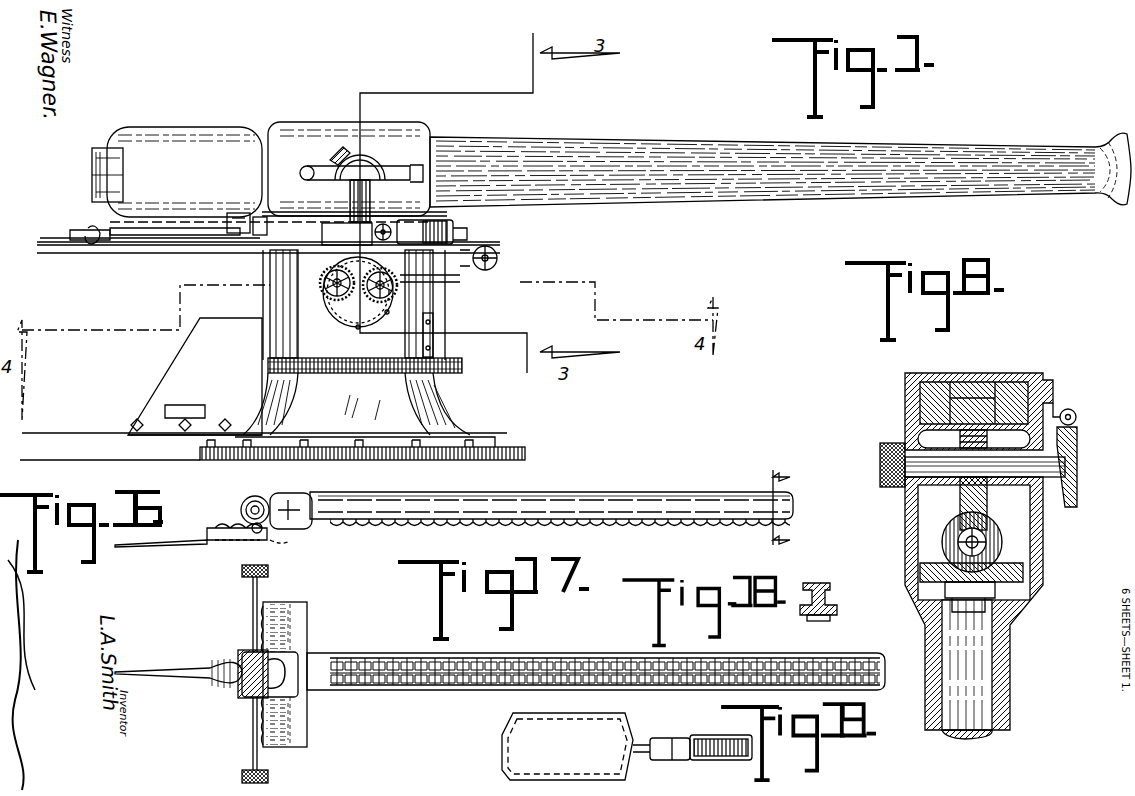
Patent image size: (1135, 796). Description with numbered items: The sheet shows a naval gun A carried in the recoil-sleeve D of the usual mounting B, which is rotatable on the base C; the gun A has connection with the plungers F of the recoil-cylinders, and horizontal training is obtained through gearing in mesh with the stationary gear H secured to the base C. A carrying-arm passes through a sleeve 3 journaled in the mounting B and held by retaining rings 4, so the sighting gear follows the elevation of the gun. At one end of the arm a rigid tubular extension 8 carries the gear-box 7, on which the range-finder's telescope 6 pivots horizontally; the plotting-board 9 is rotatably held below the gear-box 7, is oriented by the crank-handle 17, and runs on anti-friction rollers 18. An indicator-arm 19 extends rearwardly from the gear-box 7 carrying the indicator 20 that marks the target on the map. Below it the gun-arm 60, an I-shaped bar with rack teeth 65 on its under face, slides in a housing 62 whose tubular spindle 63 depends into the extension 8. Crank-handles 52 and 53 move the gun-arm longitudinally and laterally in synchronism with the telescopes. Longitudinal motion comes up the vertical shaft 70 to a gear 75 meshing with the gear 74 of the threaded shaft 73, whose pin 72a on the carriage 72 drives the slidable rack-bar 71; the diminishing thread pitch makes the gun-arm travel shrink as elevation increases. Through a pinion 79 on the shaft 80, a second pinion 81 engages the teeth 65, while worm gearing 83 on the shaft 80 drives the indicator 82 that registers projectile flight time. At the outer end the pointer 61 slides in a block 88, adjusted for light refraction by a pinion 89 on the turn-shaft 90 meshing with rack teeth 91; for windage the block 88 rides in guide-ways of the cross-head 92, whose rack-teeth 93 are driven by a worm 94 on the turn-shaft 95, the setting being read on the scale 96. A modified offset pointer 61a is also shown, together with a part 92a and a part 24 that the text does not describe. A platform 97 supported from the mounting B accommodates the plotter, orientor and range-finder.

In FIG. 1, the naval gun A is at (508, 140).
In FIG. 1, the recoil-sleeve D is at (390, 140).
In FIG. 1, the mounting B is at (270, 295).
In FIG. 1, the base C is at (455, 405).
In FIG. 1, the stationary gear H is at (465, 365).
In FIG. 1, the plungers F is at (212, 232).
In FIG. 1, the sleeve 3 is at (330, 300).
In FIG. 1, the retaining rings 4 is at (345, 320).
In FIG. 1, the range-finder's telescope 6 is at (320, 168).
In FIG. 1, the gear-box 7 is at (345, 235).
In FIG. 1, the tubular extension 8 is at (397, 281).
In FIG. 1, the plotting-board 9 is at (232, 248).
In FIG. 1, the crank-handle 17 is at (498, 258).
In FIG. 16, the anti-friction rollers 18 is at (795, 502).
In FIG. 1, the indicator-arm 19 is at (185, 230).
In FIG. 1, the indicator 20 is at (90, 230).
In FIG. 1, the cylinder 24 is at (395, 208).
In FIG. 1, the crank-handle 52 is at (326, 280).
In FIG. 1, the crank-handle 53 is at (420, 290).
In FIG. 1, the gun-arm 60 is at (158, 250).
In FIG. 8, the gun-arm 60 is at (1000, 368).
In FIG. 16, the gun-arm 60 is at (670, 500).
In FIG. 17, the gun-arm 60 is at (555, 655).
In FIG. 18, the gun-arm 60 is at (835, 600).
In FIG. 1, the pointer 61 is at (108, 250).
In FIG. 16, the pointer 61 is at (160, 545).
In FIG. 17, the pointer 61 is at (178, 660).
In FIG. 19, the modified pointer 61a is at (640, 770).
In FIG. 8, the housing 62 is at (908, 412).
In FIG. 8, the tubular supporting spindle 63 is at (1000, 712).
In FIG. 8, the rack teeth 65 is at (1003, 440).
In FIG. 16, the rack teeth 65 is at (735, 528).
In FIG. 17, the rack teeth 65 is at (760, 655).
In FIG. 18, the rack teeth 65 is at (828, 621).
In FIG. 8, the vertical shaft 70 is at (985, 732).
In FIG. 8, the slidable rack-bar 71 is at (988, 510).
In FIG. 8, the carriage 72 is at (990, 522).
In FIG. 8, the pin 72a is at (945, 552).
In FIG. 8, the threaded shaft 73 is at (990, 538).
In FIG. 8, the gear 74 is at (962, 520).
In FIG. 8, the gear 75 is at (1010, 582).
In FIG. 8, the pinion 79 is at (882, 455).
In FIG. 8, the shaft 80 is at (905, 488).
In FIG. 8, the pinion 81 is at (974, 440).
In FIG. 1, the indicator 82 is at (300, 233).
In FIG. 8, the worm gearing 83 is at (1076, 420).
In FIG. 16, the block 88 is at (243, 525).
In FIG. 17, the block 88 is at (228, 690).
In FIG. 16, the pinion 89 is at (283, 552).
In FIG. 17, the turn-shaft 90 is at (253, 612).
In FIG. 16, the rack teeth 91 is at (218, 545).
In FIG. 17, the cross-head 92 is at (305, 633).
In FIG. 19, the handle scale 92a is at (720, 735).
In FIG. 17, the rack-teeth 93 is at (264, 612).
In FIG. 17, the worm 94 is at (240, 695).
In FIG. 16, the turn-shaft 95 is at (245, 500).
In FIG. 17, the turn-shaft 95 is at (255, 740).
In FIG. 16, the scale 96 is at (300, 483).
In FIG. 17, the scale 96 is at (298, 612).
In FIG. 1, the platform 97 is at (112, 415).